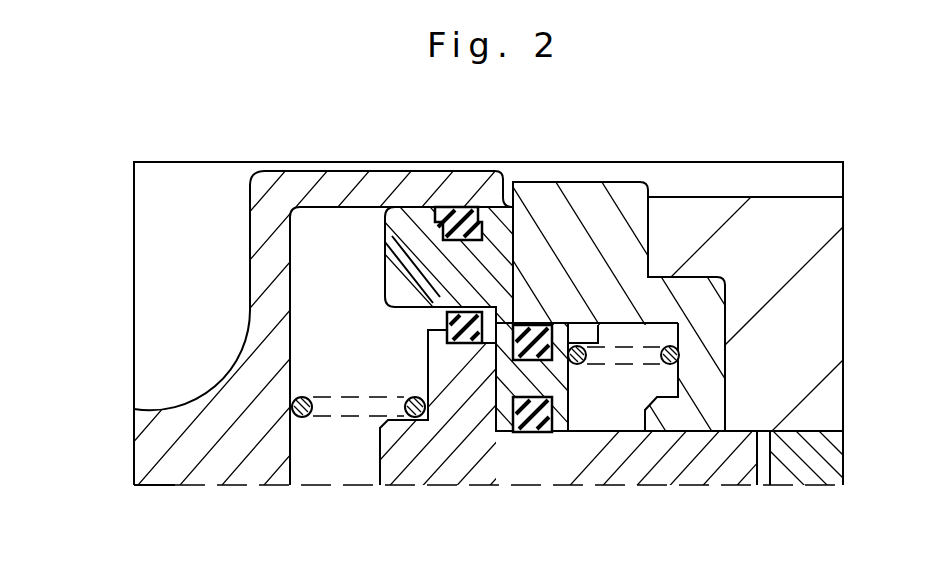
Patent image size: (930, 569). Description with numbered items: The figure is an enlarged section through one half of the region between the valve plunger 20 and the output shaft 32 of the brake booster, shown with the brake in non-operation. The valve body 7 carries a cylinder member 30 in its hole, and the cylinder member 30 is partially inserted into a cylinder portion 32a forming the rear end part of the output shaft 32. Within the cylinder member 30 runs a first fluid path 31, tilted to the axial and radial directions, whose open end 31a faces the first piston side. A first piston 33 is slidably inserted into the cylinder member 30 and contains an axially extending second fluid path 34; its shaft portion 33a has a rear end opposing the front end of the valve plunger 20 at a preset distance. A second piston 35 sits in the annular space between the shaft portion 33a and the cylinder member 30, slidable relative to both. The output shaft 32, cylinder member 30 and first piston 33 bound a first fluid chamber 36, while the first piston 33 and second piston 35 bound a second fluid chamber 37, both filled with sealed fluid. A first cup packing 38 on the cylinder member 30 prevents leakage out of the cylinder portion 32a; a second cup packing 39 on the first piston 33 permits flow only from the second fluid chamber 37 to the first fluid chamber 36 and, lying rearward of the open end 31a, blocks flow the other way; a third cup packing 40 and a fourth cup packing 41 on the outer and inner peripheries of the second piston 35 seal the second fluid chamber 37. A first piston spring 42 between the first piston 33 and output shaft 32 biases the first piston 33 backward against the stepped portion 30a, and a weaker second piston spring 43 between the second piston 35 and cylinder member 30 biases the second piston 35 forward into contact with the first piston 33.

The valve body 7 is at (830, 197).
The valve plunger 20 is at (800, 465).
The cylinder member 30 is at (655, 238).
The stepped portion 30a is at (548, 320).
The first fluid path 31 is at (383, 262).
The open end 31a is at (440, 328).
The output shaft 32 is at (153, 427).
The cylinder portion 32a is at (385, 172).
The first piston 33 is at (400, 458).
The shaft portion 33a is at (610, 460).
The second fluid path 34 is at (530, 325).
The second piston 35 is at (492, 395).
The first fluid chamber 36 is at (383, 372).
The second fluid chamber 37 is at (512, 420).
The first cup packing 38 is at (455, 206).
The second cup packing 39 is at (478, 310).
The third cup packing 40 is at (620, 258).
The fourth cup packing 41 is at (541, 432).
The first piston spring 42 is at (300, 418).
The second piston spring 43 is at (690, 432).